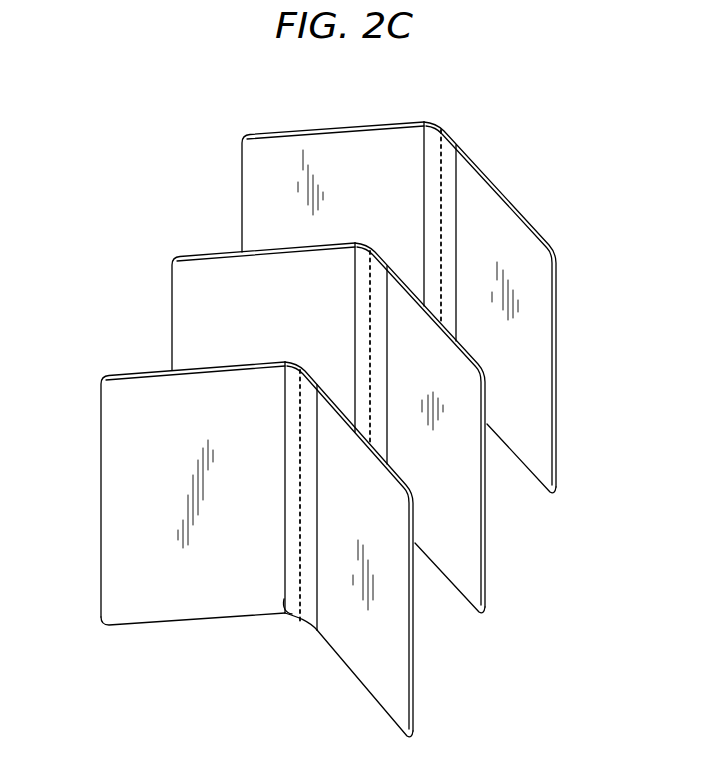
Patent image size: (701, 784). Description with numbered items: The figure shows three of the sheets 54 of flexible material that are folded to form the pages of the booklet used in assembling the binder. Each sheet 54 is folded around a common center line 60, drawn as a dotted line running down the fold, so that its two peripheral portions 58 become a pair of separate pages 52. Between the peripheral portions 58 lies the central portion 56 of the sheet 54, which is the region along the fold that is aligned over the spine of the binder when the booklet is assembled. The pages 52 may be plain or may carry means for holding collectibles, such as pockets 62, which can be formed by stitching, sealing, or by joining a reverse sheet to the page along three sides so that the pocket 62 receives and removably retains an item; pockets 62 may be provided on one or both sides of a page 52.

The page 52 is at (474, 529).
The sheet 54 is at (560, 350).
The central portion 56 is at (313, 600).
The peripheral portion 58 is at (265, 178).
The center line 60 is at (442, 148).
The pocket 62 is at (424, 175).